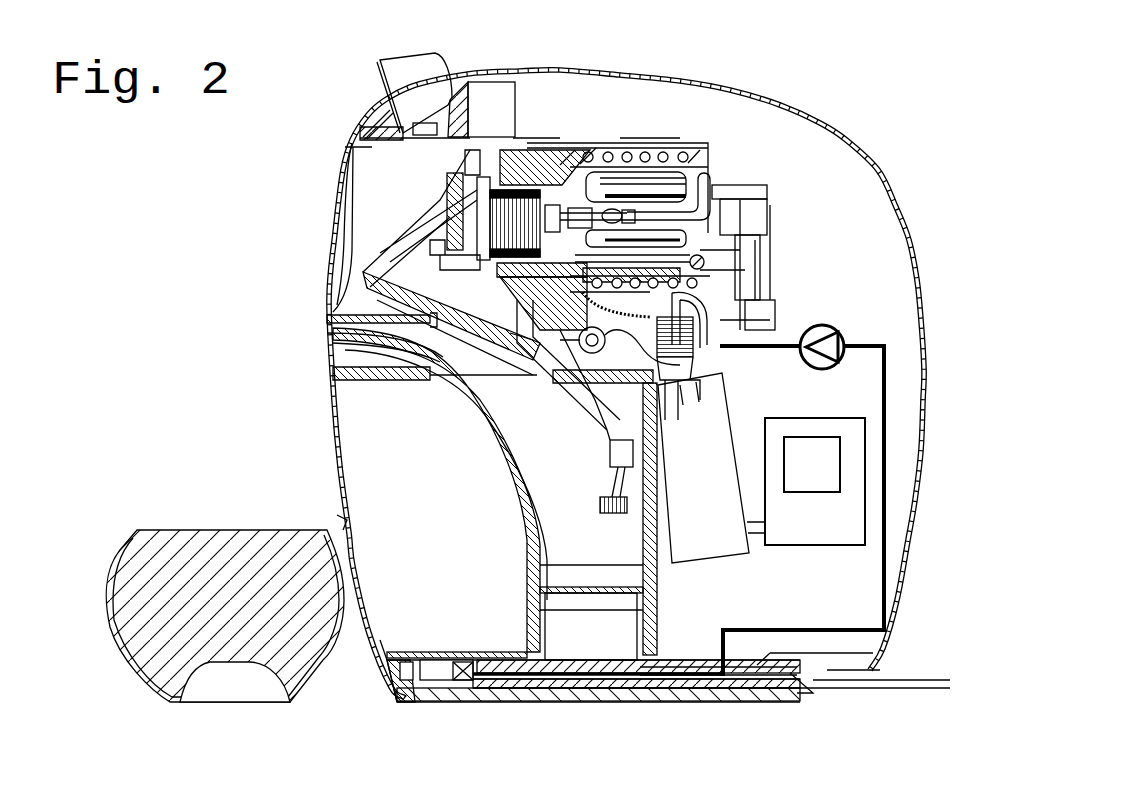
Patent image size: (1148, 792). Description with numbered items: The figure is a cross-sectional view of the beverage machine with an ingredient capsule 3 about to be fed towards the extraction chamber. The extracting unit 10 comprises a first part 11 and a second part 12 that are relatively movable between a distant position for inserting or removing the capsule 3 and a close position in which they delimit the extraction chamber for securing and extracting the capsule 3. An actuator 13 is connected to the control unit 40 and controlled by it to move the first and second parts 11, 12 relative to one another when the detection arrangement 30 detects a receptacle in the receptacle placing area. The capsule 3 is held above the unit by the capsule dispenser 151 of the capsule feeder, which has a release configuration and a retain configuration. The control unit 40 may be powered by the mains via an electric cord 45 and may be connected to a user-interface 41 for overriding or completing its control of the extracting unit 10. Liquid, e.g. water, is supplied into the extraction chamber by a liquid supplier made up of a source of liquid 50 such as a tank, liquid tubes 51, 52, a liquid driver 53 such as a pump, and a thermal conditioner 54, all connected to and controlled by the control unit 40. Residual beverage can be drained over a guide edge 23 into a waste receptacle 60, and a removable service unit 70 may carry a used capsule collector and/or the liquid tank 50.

The ingredient capsule 3 is at (421, 63).
The capsule dispenser 151 is at (463, 95).
The extracting unit 10 is at (623, 110).
The second part 12 is at (540, 163).
The thermal conditioner 54 is at (692, 157).
The user-interface 41 is at (337, 180).
The first part 11 is at (458, 161).
The liquid tube 52 is at (788, 345).
The liquid driver 53 is at (841, 331).
The control unit 40 is at (778, 425).
The removable service unit 70 is at (370, 427).
The guide edge 23 is at (521, 343).
The detection arrangement 30 is at (340, 521).
The source of liquid 50 is at (440, 490).
The waste receptacle 60 is at (598, 515).
The actuator 13 is at (717, 547).
The liquid tube 51 is at (722, 650).
The electric cord 45 is at (913, 683).